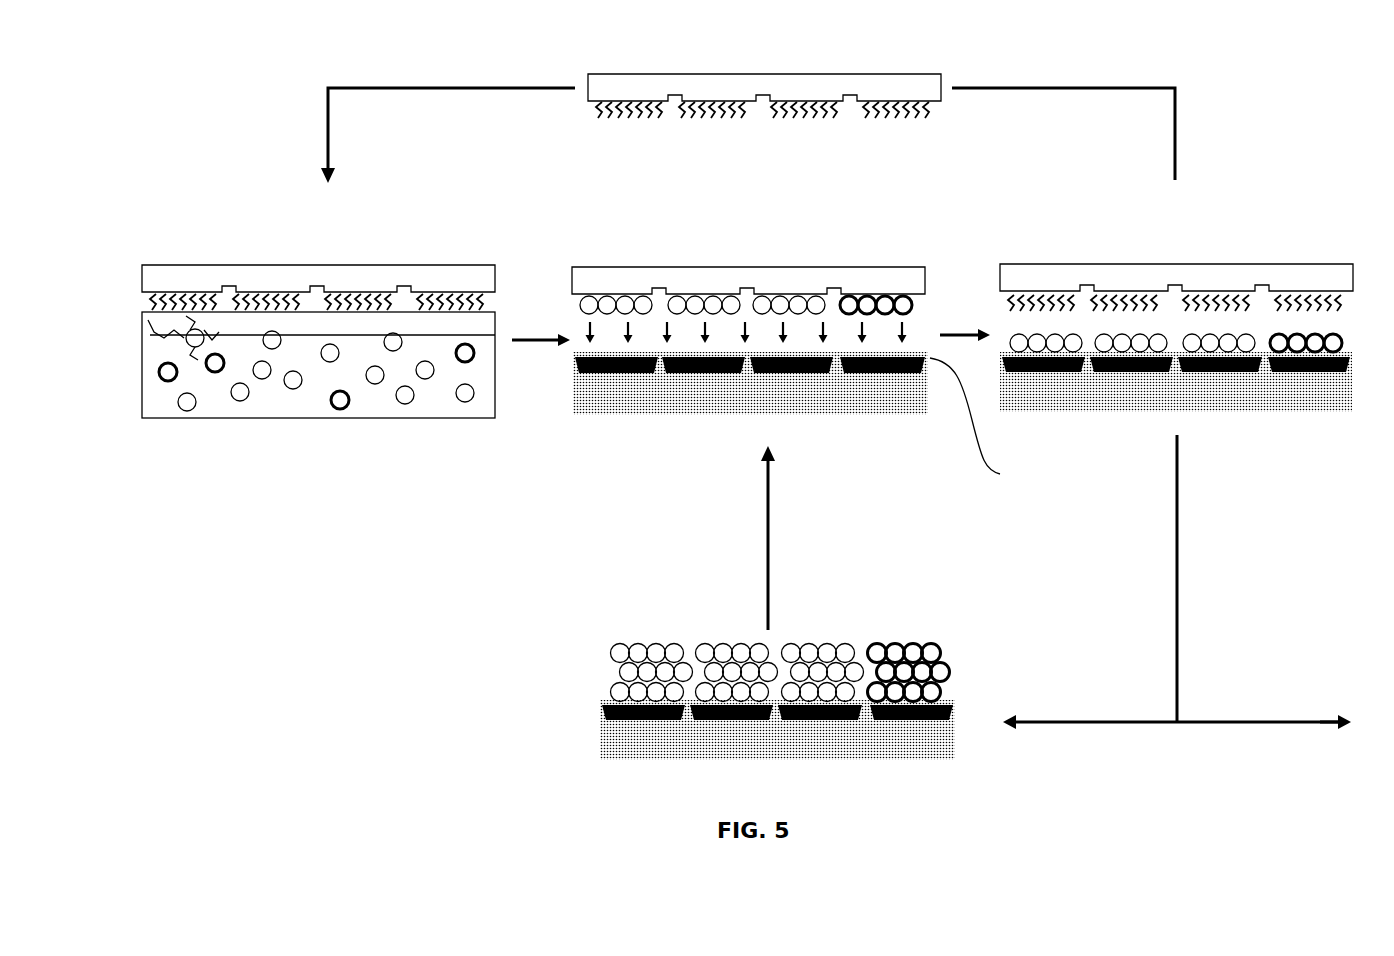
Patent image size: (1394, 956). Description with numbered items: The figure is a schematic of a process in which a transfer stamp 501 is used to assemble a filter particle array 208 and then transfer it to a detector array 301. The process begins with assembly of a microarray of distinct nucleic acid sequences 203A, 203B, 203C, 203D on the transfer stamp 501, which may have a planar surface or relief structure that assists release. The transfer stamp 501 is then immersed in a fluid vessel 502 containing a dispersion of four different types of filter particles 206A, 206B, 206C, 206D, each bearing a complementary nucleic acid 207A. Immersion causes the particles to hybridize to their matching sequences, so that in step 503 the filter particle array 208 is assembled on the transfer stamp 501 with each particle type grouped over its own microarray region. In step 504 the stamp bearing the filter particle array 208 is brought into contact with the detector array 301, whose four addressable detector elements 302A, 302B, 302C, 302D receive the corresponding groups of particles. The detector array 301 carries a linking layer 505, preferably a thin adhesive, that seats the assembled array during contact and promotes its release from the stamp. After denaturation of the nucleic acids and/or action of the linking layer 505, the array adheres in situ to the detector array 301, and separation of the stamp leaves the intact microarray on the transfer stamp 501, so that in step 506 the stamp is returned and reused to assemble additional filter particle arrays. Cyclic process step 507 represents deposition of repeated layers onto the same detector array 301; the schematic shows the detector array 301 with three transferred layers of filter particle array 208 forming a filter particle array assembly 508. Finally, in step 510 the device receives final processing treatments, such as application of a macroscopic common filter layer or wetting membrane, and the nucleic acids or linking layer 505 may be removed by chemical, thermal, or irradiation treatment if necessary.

The transfer stamp 501 is at (606, 93).
The nucleic acid sequence 203A is at (202, 292).
The nucleic acid sequence 203B is at (287, 292).
The nucleic acid sequence 203C is at (372, 292).
The nucleic acid sequence 203D is at (457, 292).
The filter particle 206A is at (232, 398).
The filter particle 206B is at (458, 398).
The filter particle 206C is at (322, 358).
The filter particle 206D is at (162, 376).
The nucleic acid 207A is at (144, 320).
The filter particle array 208 is at (576, 312).
The detector array 301 is at (873, 409).
The detector element 302A is at (830, 553).
The detector element 302B is at (917, 553).
The detector element 302C is at (1006, 553).
The detector element 302D is at (1095, 553).
The fluid vessel 502 is at (506, 411).
The step 503 is at (560, 329).
The step 504 is at (983, 324).
The linking layer 505 is at (984, 422).
The step 506 is at (1098, 75).
The cyclic process step 507 is at (828, 548).
The filter particle array assembly 508 is at (591, 695).
The step 510 is at (1285, 704).